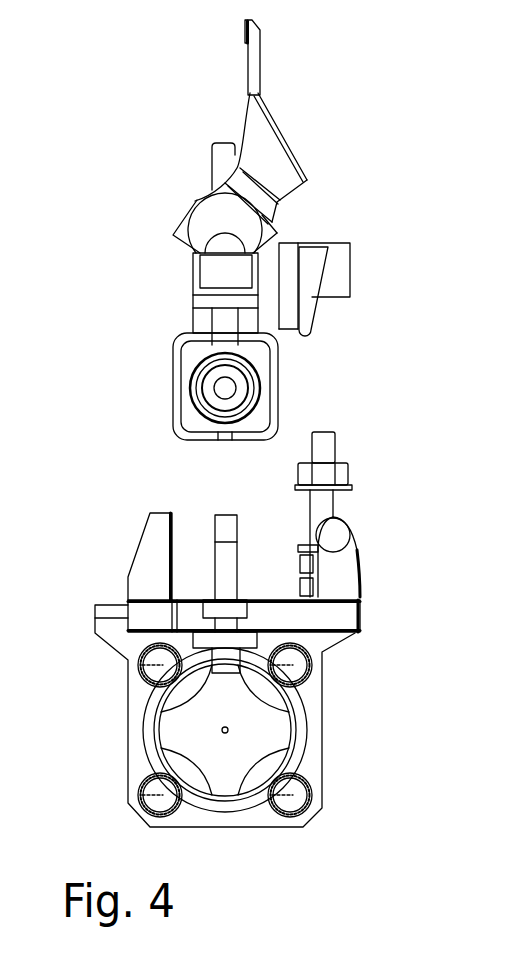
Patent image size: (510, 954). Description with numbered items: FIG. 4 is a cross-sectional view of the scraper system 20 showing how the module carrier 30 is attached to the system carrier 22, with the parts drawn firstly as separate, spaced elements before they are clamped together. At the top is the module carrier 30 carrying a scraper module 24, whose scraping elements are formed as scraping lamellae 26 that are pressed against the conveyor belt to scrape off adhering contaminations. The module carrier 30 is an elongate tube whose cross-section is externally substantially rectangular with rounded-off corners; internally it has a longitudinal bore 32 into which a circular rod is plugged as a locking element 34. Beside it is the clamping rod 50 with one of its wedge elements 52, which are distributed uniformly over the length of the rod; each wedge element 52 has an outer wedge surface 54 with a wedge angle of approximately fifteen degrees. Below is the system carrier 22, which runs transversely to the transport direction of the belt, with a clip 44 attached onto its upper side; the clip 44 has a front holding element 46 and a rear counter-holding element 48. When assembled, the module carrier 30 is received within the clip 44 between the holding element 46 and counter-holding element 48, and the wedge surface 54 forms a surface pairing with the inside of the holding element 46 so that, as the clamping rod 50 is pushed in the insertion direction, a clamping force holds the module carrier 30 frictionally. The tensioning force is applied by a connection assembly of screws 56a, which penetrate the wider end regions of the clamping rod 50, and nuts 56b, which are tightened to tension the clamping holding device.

The scraper system 20 is at (306, 126).
The system carrier 22 is at (135, 735).
The scraper module 24 is at (193, 303).
The scraping lamellae 26 is at (245, 32).
The module carrier 30 is at (275, 388).
The longitudinal bore 32 is at (193, 377).
The locking element 34 is at (220, 392).
The clip 44 is at (320, 618).
The holding element 46 is at (333, 578).
The counter-holding element 48 is at (147, 570).
The clamping rod 50 is at (288, 265).
The wedge element 52 is at (308, 277).
The wedge surface 54 is at (316, 307).
The screw 56a is at (318, 507).
The nut 56b is at (342, 480).